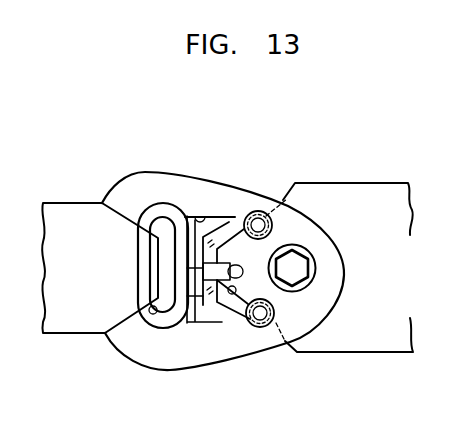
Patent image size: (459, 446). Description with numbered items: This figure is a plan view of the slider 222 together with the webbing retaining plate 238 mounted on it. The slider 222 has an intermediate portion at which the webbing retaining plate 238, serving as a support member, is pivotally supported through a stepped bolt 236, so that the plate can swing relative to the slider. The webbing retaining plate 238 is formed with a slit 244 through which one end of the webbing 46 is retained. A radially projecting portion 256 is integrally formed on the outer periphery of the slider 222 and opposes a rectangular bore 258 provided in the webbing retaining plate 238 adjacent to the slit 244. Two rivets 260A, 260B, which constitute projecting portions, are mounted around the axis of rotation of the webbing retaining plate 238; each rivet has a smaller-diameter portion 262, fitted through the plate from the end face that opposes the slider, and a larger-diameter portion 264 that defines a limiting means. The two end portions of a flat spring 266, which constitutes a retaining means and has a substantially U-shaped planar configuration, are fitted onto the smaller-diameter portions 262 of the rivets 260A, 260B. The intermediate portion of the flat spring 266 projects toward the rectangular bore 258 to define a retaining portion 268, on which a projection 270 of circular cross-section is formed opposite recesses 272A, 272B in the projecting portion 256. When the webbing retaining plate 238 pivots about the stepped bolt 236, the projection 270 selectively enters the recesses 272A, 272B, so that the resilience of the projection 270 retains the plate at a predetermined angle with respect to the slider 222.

The webbing 46 is at (67, 203).
The slider 222 is at (377, 183).
The stepped bolt 236 is at (300, 268).
The webbing retaining plate 238 is at (141, 172).
The slit 244 is at (150, 314).
The radially projecting portion 256 is at (177, 219).
The rectangular bore 258 is at (203, 216).
The rivet 260A is at (250, 325).
The rivet 260B is at (259, 211).
The smaller-diameter portion 262 is at (262, 227).
The larger-diameter portion 264 is at (268, 328).
The flat spring 266 is at (232, 222).
The retaining portion 268 is at (222, 255).
The projection 270 is at (189, 314).
The recess 272A is at (191, 269).
The recess 272B is at (191, 297).